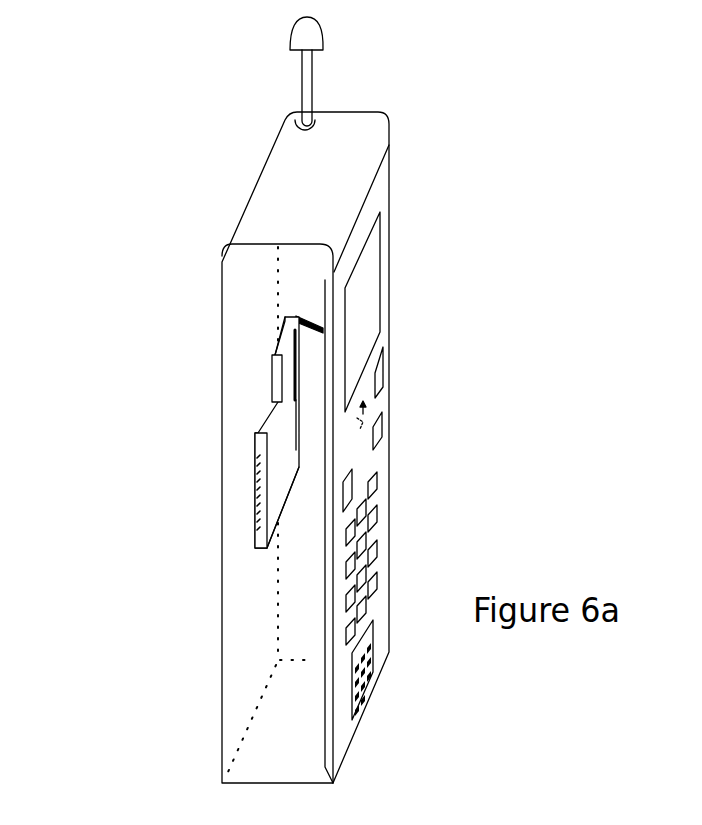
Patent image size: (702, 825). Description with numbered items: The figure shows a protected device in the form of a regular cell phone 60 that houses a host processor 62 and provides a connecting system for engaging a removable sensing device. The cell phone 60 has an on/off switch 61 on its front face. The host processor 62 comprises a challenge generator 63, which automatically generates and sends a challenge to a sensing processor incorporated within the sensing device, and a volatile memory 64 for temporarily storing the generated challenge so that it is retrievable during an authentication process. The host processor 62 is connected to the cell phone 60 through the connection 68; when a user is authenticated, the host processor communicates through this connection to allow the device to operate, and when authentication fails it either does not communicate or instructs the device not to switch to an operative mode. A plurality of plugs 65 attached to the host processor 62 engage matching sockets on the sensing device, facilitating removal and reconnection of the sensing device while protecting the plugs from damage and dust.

The cell phone 60 is at (382, 198).
The on/off switch 61 is at (380, 374).
The host processor 62 is at (278, 345).
The challenge generator 63 is at (287, 455).
The volatile memory 64 is at (285, 383).
The plugs 65 is at (259, 443).
The connection 68 is at (313, 320).